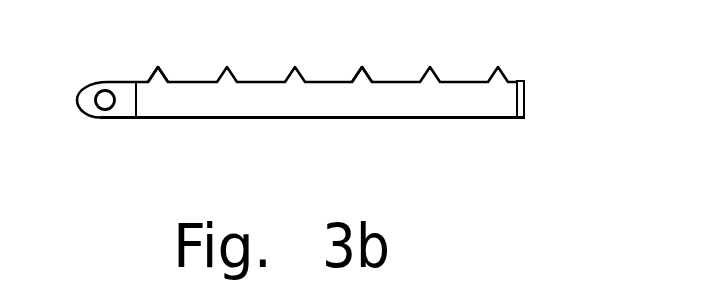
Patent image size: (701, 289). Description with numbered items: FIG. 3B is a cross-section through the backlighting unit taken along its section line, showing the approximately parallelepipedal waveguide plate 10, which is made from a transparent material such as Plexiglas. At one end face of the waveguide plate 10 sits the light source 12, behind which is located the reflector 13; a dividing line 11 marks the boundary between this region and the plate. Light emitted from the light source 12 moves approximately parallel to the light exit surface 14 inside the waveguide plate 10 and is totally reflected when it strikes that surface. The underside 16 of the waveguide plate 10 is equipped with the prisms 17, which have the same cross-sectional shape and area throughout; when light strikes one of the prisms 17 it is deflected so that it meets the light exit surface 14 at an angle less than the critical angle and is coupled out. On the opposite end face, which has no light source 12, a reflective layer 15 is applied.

The waveguide plate 10 is at (340, 100).
The dividing line between head and strap 11 is at (136, 102).
The light source 12 is at (105, 100).
The reflector 13 is at (88, 118).
The light exit surface 14 is at (265, 118).
The reflective layer 15 is at (524, 93).
The underside 16 is at (192, 80).
The prisms 17 is at (360, 77).